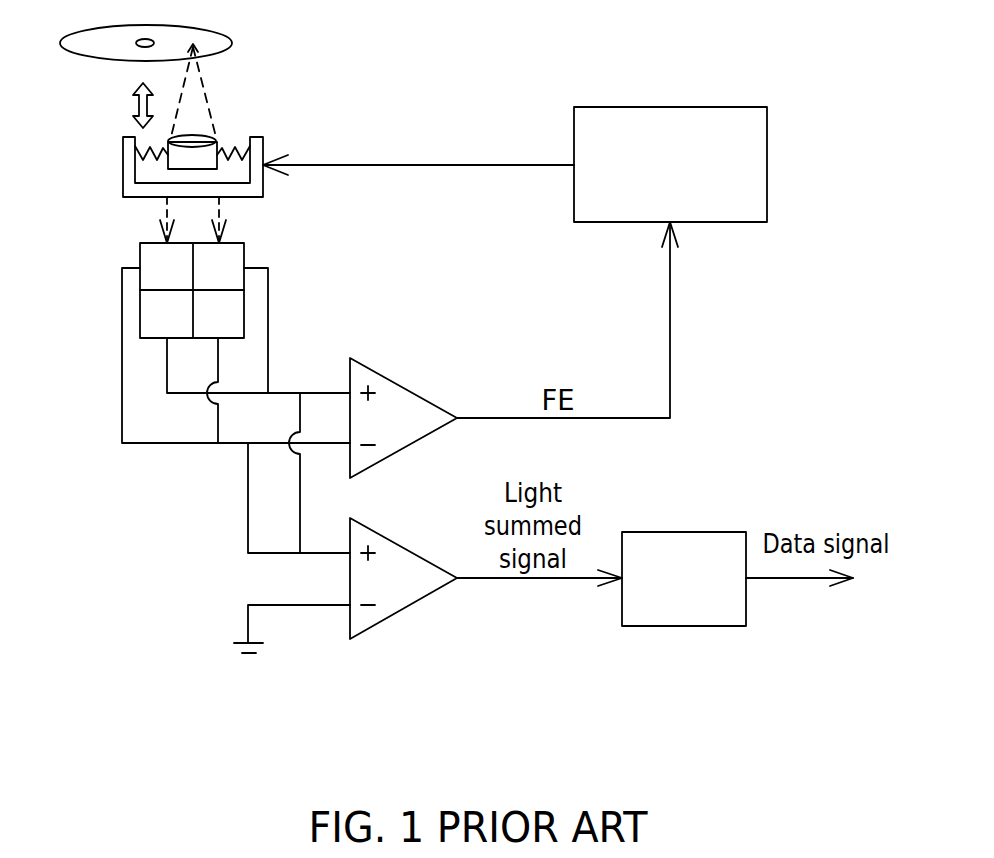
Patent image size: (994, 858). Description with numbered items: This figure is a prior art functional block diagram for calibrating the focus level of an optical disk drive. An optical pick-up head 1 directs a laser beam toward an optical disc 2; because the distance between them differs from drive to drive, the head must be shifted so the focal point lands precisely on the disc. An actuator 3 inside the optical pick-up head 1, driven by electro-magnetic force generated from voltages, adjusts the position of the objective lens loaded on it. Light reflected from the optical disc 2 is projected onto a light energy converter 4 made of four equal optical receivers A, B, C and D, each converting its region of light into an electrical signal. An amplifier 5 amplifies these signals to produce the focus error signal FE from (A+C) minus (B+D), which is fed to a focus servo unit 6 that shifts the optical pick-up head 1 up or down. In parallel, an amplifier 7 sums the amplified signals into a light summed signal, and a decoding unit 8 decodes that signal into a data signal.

The optical pick-up head 1 is at (257, 137).
The optical disc 2 is at (231, 42).
The actuator 3 is at (215, 143).
The light energy converter 4 is at (244, 243).
The amplifier 5 is at (405, 388).
The focus servo unit 6 is at (670, 107).
The amplifier 7 is at (403, 547).
The decoding unit 8 is at (683, 532).